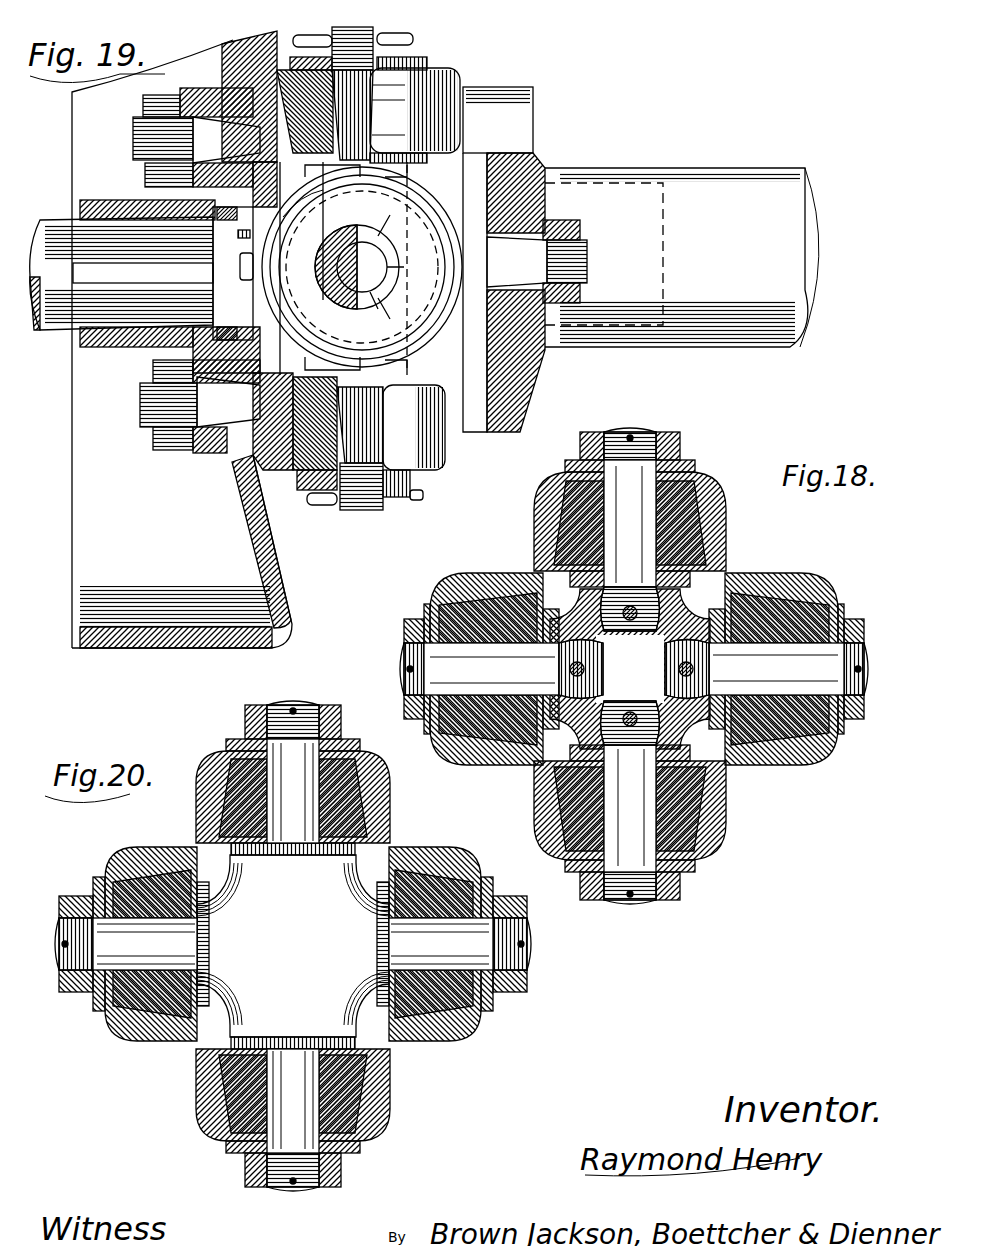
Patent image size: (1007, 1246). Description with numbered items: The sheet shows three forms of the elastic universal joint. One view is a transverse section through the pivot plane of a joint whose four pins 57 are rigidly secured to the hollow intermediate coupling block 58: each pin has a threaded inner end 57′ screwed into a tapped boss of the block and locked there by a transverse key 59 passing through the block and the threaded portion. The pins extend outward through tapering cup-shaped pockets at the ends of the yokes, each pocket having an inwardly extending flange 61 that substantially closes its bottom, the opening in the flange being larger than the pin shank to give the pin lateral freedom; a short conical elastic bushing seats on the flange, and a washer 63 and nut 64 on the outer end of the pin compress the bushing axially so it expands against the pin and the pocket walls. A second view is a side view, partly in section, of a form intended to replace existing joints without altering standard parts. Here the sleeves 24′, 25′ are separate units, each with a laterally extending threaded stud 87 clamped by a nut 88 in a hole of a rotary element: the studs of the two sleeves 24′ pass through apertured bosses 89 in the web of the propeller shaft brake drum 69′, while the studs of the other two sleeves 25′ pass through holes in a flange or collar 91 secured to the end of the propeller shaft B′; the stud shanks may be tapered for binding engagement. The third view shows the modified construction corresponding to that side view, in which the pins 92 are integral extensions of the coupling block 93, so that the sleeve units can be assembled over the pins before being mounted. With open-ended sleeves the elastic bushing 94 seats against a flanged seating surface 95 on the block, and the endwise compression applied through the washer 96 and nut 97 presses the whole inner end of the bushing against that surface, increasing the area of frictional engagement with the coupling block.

In FIG. 19, the sleeve 24′ is at (457, 87).
In FIG. 20, the sleeve 24′ is at (222, 786).
In FIG. 19, the sleeve 25′ is at (285, 217).
In FIG. 20, the sleeve 25′ is at (110, 878).
In FIG. 18, the pin 57 is at (638, 499).
In FIG. 18, the threaded inner end 57′ is at (630, 580).
In FIG. 18, the intermediate coupling block 58 is at (698, 591).
In FIG. 18, the transverse key 59 is at (584, 669).
In FIG. 18, the inwardly extending flange 61 is at (717, 551).
In FIG. 18, the washer 63 is at (694, 466).
In FIG. 18, the nut 64 is at (676, 448).
In FIG. 19, the propeller shaft brake drum 69′ is at (294, 604).
In FIG. 19, the threaded stud 87 is at (202, 138).
In FIG. 19, the nut 88 is at (148, 180).
In FIG. 19, the apertured boss 89 is at (194, 97).
In FIG. 19, the flange or collar 91 is at (523, 108).
In FIG. 19, the pin 92 is at (357, 122).
In FIG. 20, the pin 92 is at (283, 802).
In FIG. 19, the coupling block 93 is at (340, 290).
In FIG. 20, the coupling block 93 is at (252, 907).
In FIG. 19, the elastic bushing 94 is at (330, 145).
In FIG. 20, the elastic bushing 94 is at (253, 760).
In FIG. 19, the flanged seating surface 95 is at (303, 205).
In FIG. 20, the flanged seating surface 95 is at (235, 849).
In FIG. 19, the washer 96 is at (420, 57).
In FIG. 20, the washer 96 is at (335, 745).
In FIG. 19, the nut 97 is at (414, 42).
In FIG. 20, the nut 97 is at (322, 719).
In FIG. 19, the propeller shaft B′ is at (800, 167).